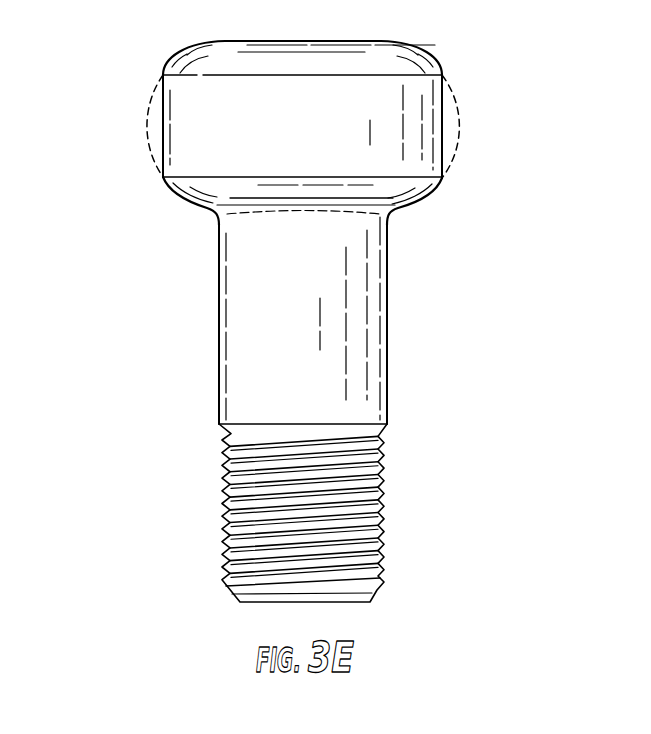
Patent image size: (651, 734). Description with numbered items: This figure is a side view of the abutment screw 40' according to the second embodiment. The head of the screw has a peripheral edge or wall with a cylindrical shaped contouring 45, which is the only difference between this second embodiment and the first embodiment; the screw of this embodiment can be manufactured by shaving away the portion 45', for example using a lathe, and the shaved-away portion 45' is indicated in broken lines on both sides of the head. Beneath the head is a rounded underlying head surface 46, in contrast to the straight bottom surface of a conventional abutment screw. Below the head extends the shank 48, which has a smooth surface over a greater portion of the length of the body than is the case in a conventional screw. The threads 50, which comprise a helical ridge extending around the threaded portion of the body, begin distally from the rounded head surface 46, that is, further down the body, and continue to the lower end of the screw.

The cylindrical shaped contouring of the peripheral edge of the screw head 45 is at (296, 109).
The shaved-away portion 45' is at (300, 130).
The rounded underlying head surface 46 is at (437, 187).
The shank 48 is at (388, 352).
The threads 50 is at (387, 505).
The abutment screw 40' is at (456, 590).